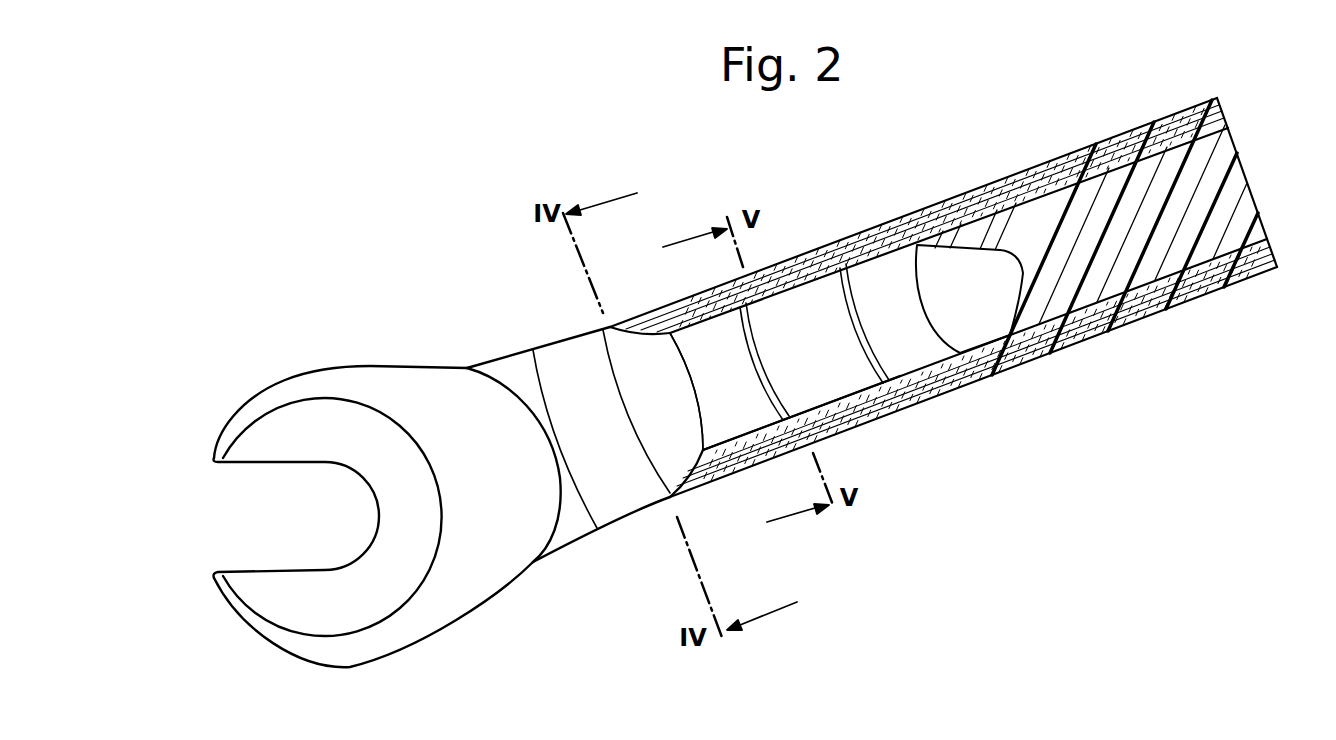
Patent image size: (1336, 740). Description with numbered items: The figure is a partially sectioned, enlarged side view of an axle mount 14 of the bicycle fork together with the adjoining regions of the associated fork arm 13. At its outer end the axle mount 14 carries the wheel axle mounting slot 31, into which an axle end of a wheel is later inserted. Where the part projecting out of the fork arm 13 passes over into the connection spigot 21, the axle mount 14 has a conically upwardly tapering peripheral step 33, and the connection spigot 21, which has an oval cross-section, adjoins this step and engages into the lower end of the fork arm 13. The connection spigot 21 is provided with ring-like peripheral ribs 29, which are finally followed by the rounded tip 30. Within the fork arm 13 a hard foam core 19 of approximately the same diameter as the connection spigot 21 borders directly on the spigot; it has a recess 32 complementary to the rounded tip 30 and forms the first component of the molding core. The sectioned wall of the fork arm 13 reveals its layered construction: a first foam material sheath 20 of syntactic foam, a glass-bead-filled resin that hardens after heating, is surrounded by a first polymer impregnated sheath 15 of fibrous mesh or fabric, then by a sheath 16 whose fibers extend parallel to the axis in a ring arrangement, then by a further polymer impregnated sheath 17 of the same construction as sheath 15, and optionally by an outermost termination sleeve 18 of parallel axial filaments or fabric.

The fork arm 13 is at (883, 212).
The axle mount 14 is at (648, 512).
The first polymer impregnated sheath 15 is at (1138, 125).
The sheath 16 is at (1092, 140).
The sheath 17 is at (1035, 160).
The termination sleeve 18 is at (1000, 173).
The hard foam core 19 is at (1228, 167).
The first foam material sheath 20 is at (1177, 113).
The connection spigot 21 is at (857, 373).
The ring-like peripheral ribs 29 is at (737, 310).
The rounded tip 30 is at (987, 295).
The wheel axle mounting slot 31 is at (236, 529).
The recess 32 is at (962, 236).
The conically upwardly tapering peripheral step 33 is at (680, 452).